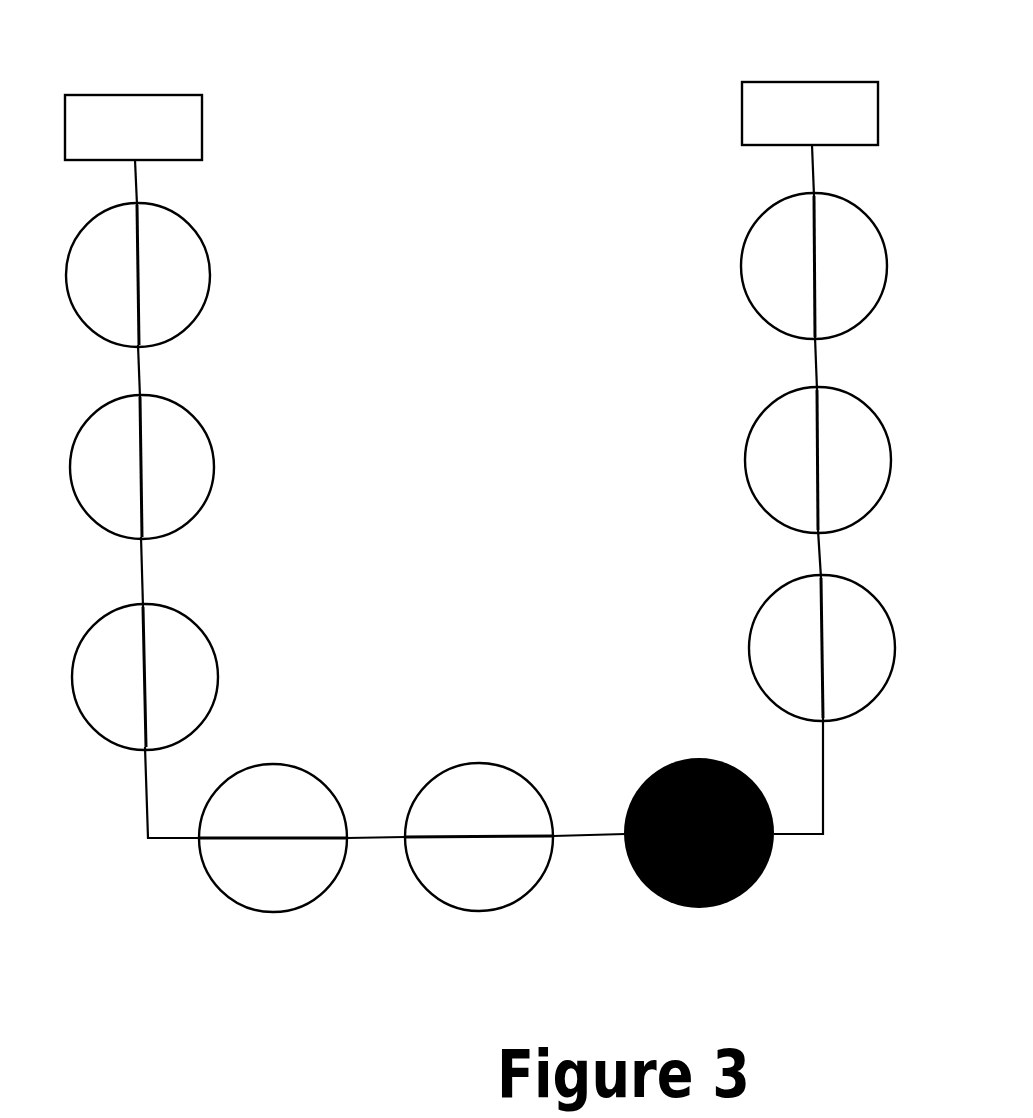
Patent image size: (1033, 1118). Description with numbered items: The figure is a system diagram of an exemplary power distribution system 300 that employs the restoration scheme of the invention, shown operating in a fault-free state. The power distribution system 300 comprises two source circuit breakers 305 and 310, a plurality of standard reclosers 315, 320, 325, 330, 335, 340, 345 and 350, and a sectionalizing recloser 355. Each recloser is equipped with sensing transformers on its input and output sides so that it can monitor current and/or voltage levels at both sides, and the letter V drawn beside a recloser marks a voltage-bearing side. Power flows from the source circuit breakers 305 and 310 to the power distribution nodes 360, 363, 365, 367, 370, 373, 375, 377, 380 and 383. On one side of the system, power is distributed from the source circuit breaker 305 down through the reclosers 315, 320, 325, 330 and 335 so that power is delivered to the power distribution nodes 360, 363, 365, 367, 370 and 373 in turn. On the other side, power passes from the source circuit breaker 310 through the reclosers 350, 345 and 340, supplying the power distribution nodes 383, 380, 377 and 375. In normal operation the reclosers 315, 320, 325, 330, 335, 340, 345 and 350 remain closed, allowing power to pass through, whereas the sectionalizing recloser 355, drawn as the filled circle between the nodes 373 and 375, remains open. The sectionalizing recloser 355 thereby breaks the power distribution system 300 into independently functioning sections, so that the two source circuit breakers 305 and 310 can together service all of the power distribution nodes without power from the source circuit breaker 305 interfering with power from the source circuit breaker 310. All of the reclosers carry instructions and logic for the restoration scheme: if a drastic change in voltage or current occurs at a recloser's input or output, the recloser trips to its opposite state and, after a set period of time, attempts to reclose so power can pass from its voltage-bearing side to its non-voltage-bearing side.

The power distribution system 300 is at (477, 27).
The source circuit breaker 305 is at (202, 123).
The source circuit breaker 310 is at (741, 112).
The recloser 315 is at (212, 270).
The recloser 320 is at (216, 455).
The recloser 325 is at (218, 665).
The recloser 330 is at (268, 770).
The recloser 335 is at (478, 768).
The recloser 340 is at (747, 648).
The recloser 345 is at (743, 460).
The recloser 350 is at (740, 266).
The sectionalizing recloser 355 is at (700, 903).
The power distribution node 360 is at (135, 187).
The power distribution node 363 is at (139, 378).
The power distribution node 365 is at (142, 587).
The power distribution node 367 is at (148, 810).
The power distribution node 370 is at (378, 838).
The power distribution node 373 is at (587, 836).
The power distribution node 375 is at (823, 805).
The power distribution node 377 is at (820, 570).
The power distribution node 380 is at (816, 368).
The power distribution node 383 is at (813, 175).